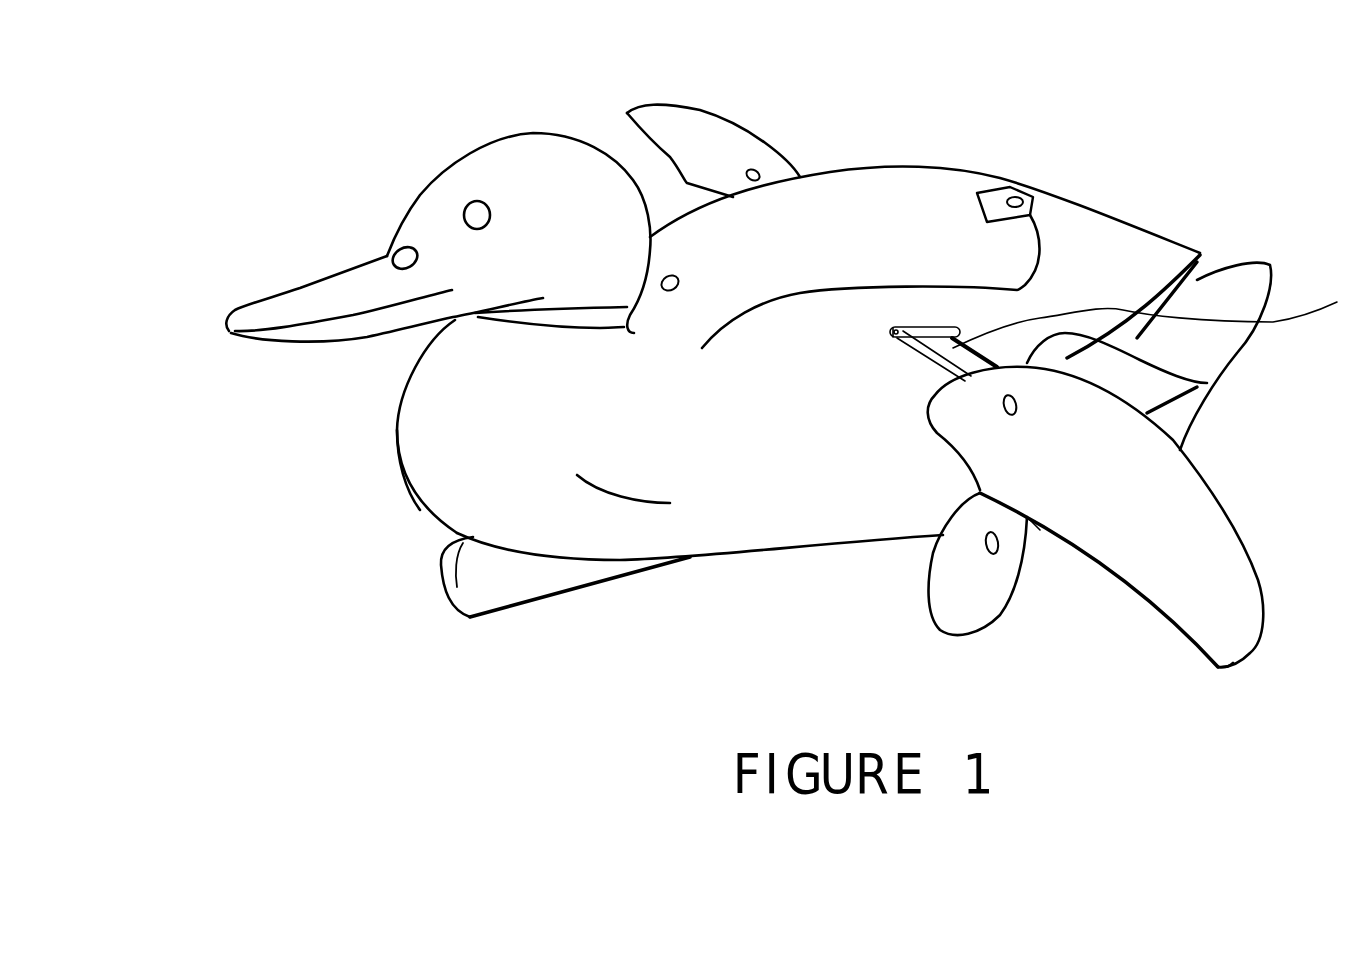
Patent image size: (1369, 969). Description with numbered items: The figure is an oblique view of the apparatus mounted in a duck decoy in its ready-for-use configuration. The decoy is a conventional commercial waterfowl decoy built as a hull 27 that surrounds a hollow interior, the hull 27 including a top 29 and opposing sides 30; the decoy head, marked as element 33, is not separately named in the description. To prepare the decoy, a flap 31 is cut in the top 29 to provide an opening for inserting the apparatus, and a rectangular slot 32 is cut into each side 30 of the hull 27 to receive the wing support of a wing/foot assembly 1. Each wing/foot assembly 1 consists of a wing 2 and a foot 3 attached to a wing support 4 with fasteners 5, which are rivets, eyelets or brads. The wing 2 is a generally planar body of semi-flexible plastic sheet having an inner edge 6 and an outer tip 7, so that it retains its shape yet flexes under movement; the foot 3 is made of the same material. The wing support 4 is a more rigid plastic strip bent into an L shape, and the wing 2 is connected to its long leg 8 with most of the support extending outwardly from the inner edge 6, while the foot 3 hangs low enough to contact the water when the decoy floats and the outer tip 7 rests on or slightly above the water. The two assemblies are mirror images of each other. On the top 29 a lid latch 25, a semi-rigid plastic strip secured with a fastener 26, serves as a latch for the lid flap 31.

The wing/foot assembly 1 is at (1037, 527).
The wing 2 is at (687, 143).
The foot 3 is at (972, 597).
The wing support 4 is at (930, 360).
The fasteners 5 is at (755, 170).
The inner edge 6 is at (1210, 383).
The outer tip 7 is at (1222, 667).
The long leg 8 is at (1156, 314).
The lid latch 25 is at (993, 200).
The fastener 26 is at (1018, 192).
The hull 27 is at (407, 495).
The top 29 is at (1087, 247).
The sides 30 is at (703, 478).
The flap 31 is at (900, 193).
The rectangular slot 32 is at (893, 338).
The head 33 is at (670, 275).